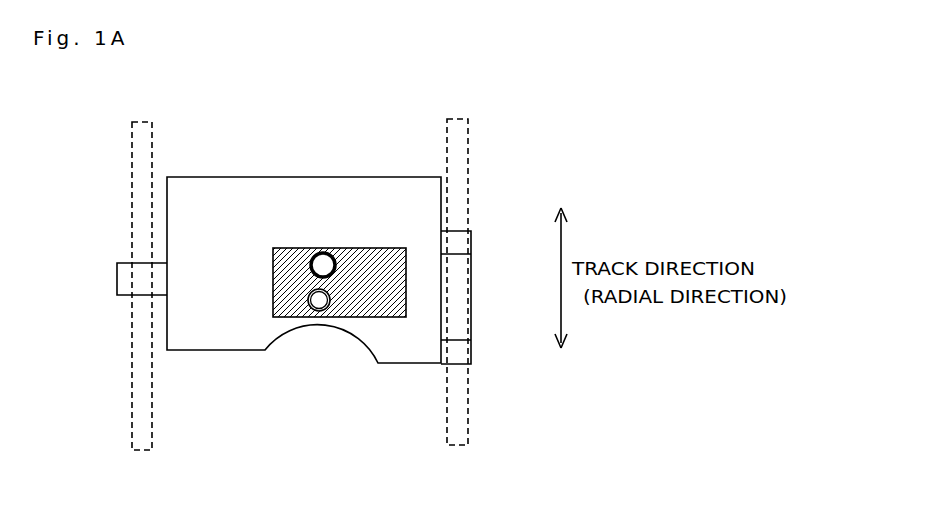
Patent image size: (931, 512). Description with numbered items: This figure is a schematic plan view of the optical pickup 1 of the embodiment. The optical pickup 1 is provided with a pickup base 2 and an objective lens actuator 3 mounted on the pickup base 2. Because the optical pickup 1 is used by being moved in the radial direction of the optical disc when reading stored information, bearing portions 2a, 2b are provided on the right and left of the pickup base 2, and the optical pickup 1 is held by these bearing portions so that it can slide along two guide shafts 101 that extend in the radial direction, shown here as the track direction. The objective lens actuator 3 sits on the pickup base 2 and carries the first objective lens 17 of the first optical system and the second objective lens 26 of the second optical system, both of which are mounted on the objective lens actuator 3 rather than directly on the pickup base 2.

The optical pickup 1 is at (385, 111).
The pickup base 2 is at (206, 351).
The bearing portion 2a is at (122, 286).
The bearing portion 2b is at (470, 245).
The objective lens actuator 3 is at (360, 248).
The first objective lens 17 is at (319, 311).
The second objective lens 26 is at (314, 256).
The guide shaft 101 is at (137, 446).